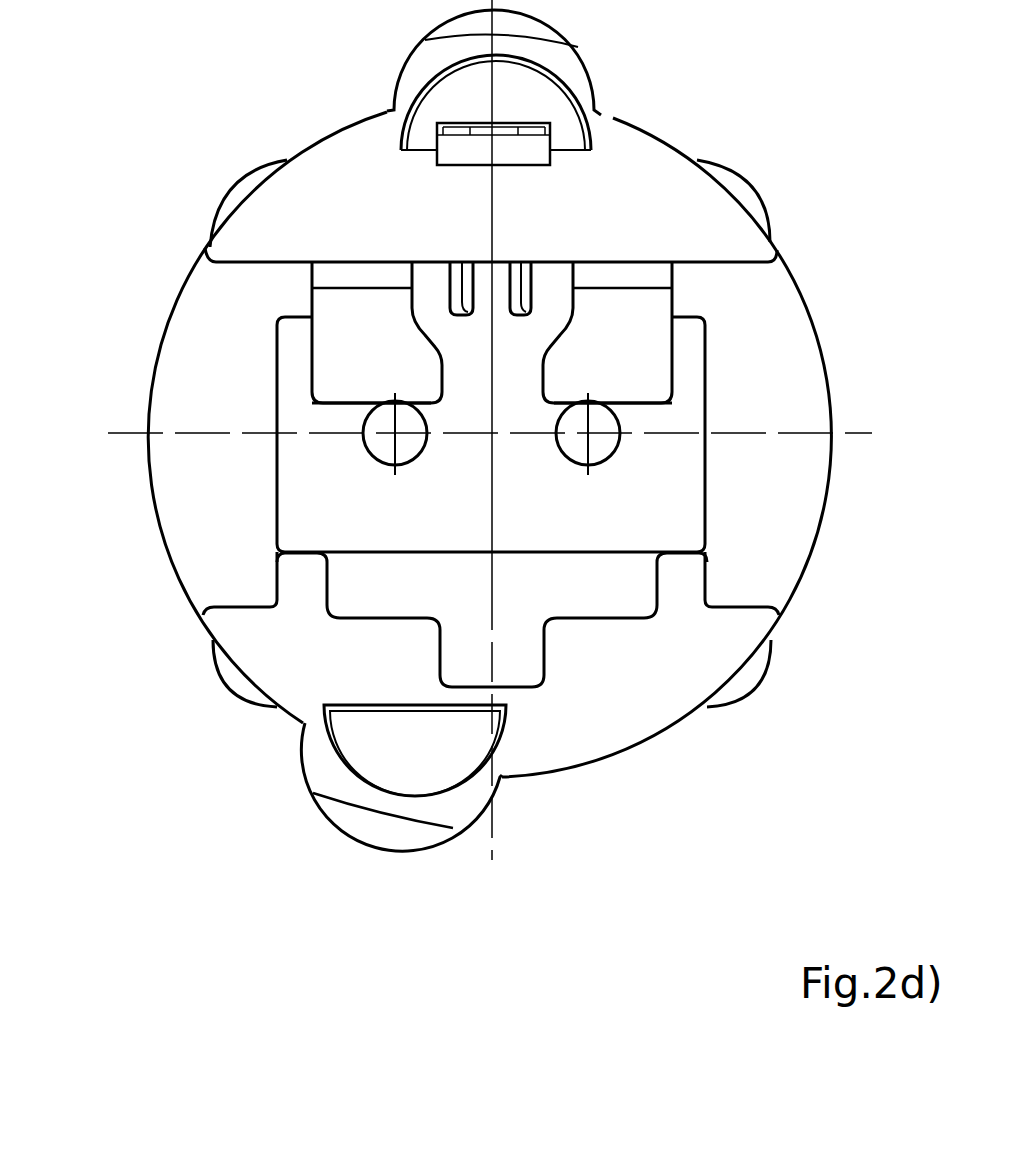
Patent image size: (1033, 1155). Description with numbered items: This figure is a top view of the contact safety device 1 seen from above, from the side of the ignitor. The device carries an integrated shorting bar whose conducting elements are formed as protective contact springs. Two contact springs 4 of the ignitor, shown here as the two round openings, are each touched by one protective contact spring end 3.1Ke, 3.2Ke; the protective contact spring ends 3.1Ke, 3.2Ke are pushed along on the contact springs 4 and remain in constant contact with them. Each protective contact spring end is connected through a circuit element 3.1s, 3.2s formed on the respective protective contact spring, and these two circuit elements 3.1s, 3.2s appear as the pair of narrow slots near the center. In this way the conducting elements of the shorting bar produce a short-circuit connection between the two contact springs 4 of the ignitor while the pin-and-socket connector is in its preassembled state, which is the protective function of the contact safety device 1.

The contact safety device 1 is at (607, 815).
The contact spring 4 is at (372, 450).
The circuit element 3.1s is at (470, 282).
The circuit element 3.2s is at (518, 297).
The protective contact spring end 3.1Ke is at (352, 402).
The protective contact spring end 3.2Ke is at (636, 405).